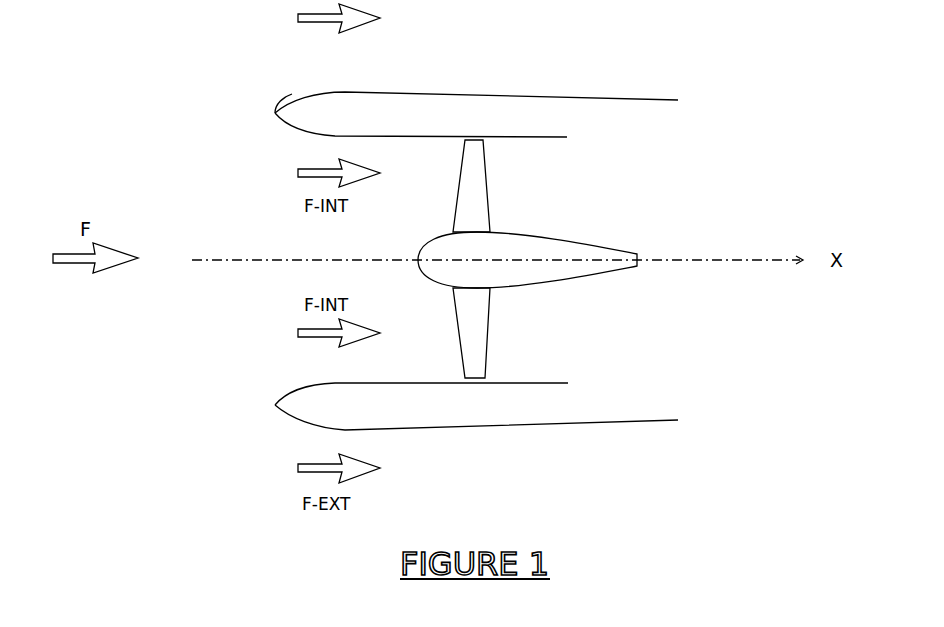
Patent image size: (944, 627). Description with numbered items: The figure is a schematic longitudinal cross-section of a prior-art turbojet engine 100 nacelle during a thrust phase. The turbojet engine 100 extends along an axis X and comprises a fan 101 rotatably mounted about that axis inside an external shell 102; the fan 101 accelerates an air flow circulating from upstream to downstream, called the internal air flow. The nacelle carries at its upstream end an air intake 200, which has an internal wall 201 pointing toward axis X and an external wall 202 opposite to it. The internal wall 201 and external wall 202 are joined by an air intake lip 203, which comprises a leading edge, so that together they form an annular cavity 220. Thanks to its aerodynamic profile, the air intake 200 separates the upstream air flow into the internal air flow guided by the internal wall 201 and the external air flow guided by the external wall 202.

The turbojet engine 100 is at (700, 158).
The fan 101 is at (418, 256).
The external shell 102 is at (429, 383).
The air intake 200 is at (268, 392).
The internal wall 201 is at (288, 130).
The external wall 202 is at (314, 96).
The air intake lip 203 is at (277, 110).
The annular cavity 220 is at (308, 398).